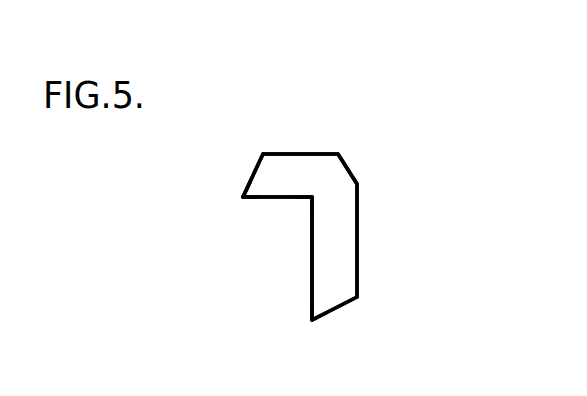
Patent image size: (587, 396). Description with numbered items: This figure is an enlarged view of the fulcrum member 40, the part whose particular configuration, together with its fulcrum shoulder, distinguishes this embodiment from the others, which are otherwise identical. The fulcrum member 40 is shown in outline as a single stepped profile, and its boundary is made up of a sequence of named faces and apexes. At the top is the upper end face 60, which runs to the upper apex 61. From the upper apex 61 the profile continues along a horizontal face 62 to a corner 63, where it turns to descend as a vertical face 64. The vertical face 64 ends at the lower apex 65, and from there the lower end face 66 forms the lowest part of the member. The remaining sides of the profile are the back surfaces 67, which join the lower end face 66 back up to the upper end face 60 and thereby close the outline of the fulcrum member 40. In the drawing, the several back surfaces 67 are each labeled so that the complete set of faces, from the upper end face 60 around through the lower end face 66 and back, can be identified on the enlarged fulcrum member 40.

The fulcrum member 40 is at (363, 124).
The upper end face 60 is at (259, 163).
The upper apex 61 is at (243, 197).
The horizontal face 62 is at (268, 198).
The corner 63 is at (309, 199).
The vertical face 64 is at (310, 277).
The lower apex 65 is at (312, 320).
The lower end face 66 is at (338, 308).
The back surfaces 67 is at (312, 154).